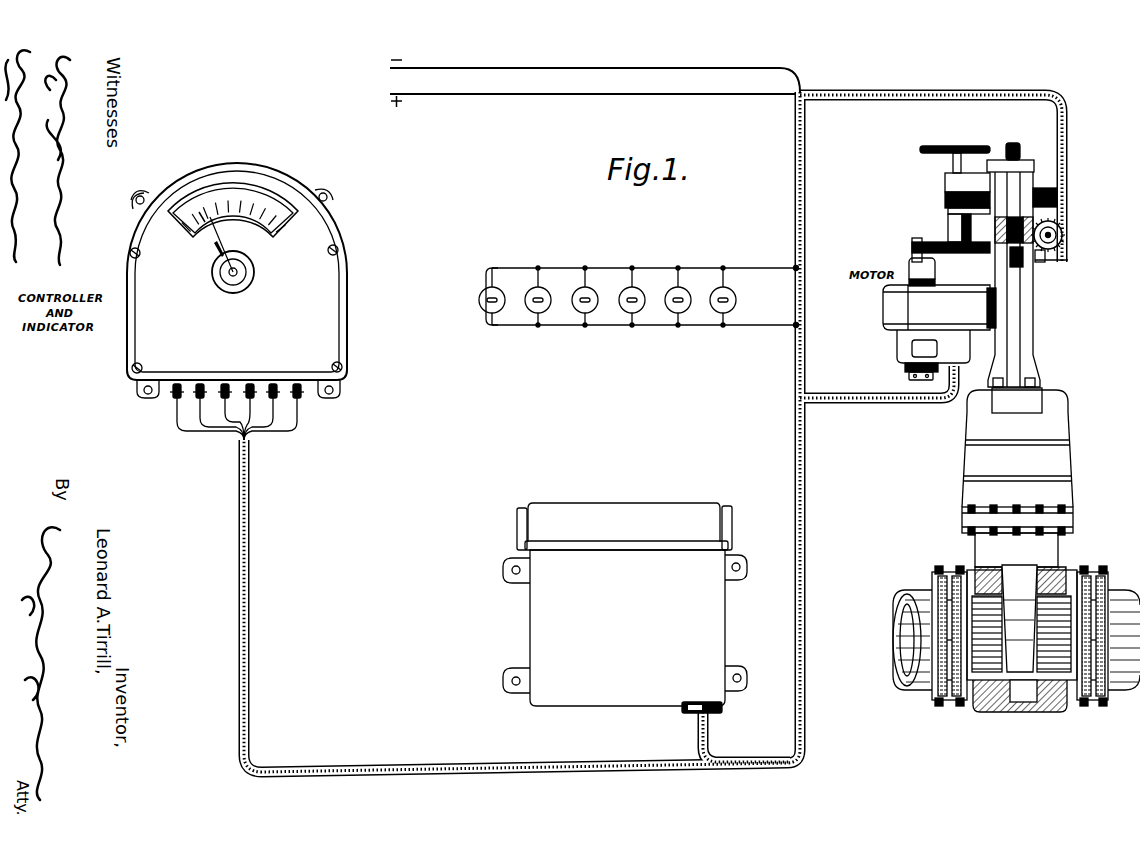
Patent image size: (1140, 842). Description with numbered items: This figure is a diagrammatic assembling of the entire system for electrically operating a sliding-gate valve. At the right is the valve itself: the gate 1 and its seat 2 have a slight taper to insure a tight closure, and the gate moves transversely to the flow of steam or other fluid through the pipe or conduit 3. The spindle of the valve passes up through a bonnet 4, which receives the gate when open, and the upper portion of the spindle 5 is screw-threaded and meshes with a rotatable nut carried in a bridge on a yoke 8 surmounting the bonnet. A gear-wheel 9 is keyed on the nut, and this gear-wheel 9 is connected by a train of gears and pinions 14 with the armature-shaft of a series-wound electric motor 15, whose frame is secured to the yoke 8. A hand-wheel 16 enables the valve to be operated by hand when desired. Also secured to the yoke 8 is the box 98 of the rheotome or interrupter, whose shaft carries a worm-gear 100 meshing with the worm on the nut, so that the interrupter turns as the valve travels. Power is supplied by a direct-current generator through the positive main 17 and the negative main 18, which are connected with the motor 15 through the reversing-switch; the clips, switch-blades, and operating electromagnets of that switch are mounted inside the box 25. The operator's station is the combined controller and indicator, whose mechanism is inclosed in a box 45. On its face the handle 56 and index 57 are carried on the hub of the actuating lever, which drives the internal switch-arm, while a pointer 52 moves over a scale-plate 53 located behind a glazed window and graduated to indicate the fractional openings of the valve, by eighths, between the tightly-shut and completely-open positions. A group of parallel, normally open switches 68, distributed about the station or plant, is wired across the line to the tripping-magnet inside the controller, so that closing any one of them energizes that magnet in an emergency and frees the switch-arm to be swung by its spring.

The gate 1 is at (1020, 593).
The seat 2 is at (1047, 684).
The pipe or conduit 3 is at (893, 605).
The bonnet 4 is at (1045, 458).
The spindle 5 is at (1023, 260).
The yoke 8 is at (1033, 322).
The gear-wheel 9 is at (1057, 197).
The train of gears and pinions 14 is at (945, 201).
The electric motor 15 is at (939, 319).
The hand-wheel 16 is at (920, 149).
The positive main 17 is at (477, 96).
The negative main 18 is at (487, 70).
The box 25 is at (625, 595).
The box 45 is at (237, 301).
The pointer 52 is at (195, 225).
The scale-plate 53 is at (240, 184).
The handle 56 is at (254, 272).
The index 57 is at (221, 244).
The normally open switches 68 is at (639, 302).
The box 98 is at (1068, 258).
The worm-gear 100 is at (1062, 232).